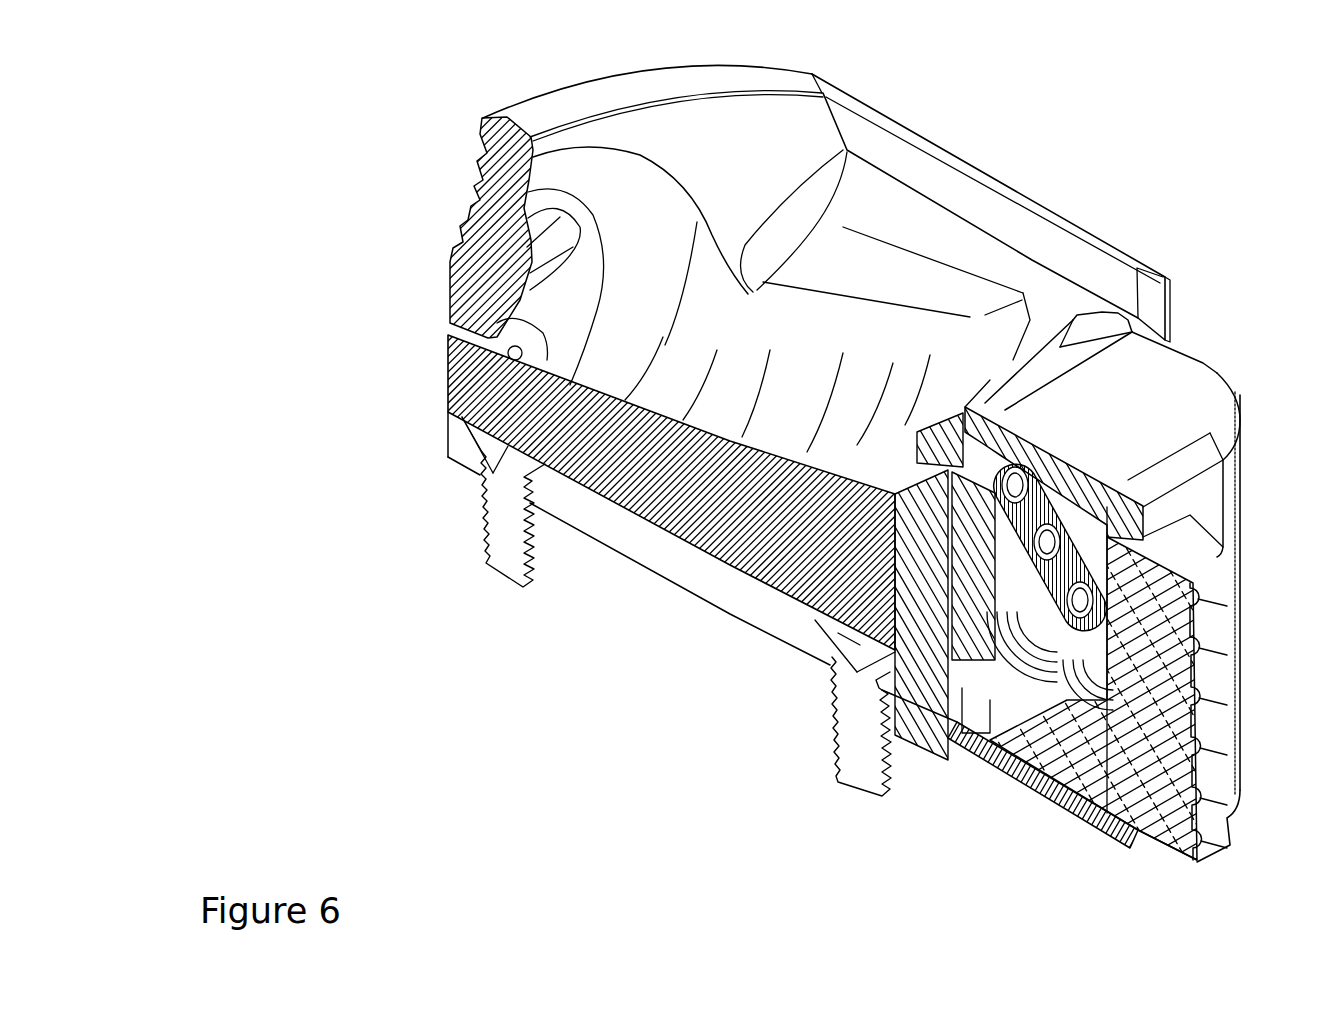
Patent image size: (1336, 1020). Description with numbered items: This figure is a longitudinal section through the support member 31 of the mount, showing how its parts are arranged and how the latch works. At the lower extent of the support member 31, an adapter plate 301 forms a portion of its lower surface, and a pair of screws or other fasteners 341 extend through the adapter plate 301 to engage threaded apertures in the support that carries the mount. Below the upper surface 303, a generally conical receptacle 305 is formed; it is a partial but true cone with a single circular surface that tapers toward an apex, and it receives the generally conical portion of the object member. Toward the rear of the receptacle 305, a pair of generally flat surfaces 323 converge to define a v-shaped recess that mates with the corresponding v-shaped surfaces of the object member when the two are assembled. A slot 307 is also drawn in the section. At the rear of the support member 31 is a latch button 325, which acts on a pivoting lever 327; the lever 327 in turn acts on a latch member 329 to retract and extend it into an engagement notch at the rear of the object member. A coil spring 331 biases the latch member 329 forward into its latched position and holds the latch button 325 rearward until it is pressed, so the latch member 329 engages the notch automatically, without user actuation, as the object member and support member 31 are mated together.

The support member 31 is at (345, 230).
The adapter plate 301 is at (675, 560).
The upper surface 303 is at (582, 88).
The conical receptacle 305 is at (653, 242).
The slot 307 is at (793, 320).
The generally flat surfaces 323 is at (1037, 320).
The latch button 325 is at (1222, 813).
The pivoting lever 327 is at (1065, 527).
The latch member 329 is at (945, 440).
The coil spring 331 is at (1027, 683).
The fasteners 341 is at (497, 560).